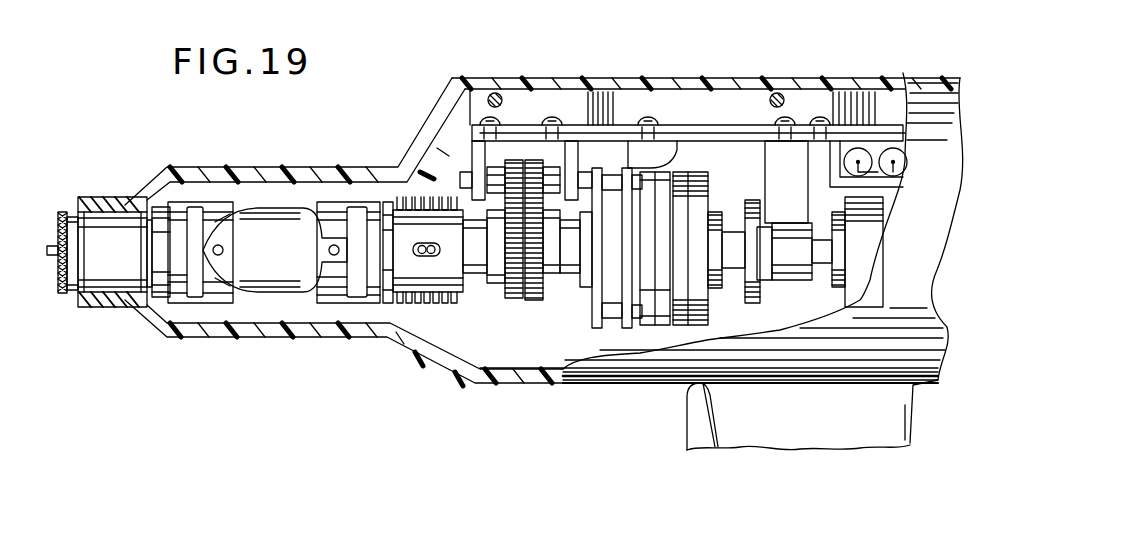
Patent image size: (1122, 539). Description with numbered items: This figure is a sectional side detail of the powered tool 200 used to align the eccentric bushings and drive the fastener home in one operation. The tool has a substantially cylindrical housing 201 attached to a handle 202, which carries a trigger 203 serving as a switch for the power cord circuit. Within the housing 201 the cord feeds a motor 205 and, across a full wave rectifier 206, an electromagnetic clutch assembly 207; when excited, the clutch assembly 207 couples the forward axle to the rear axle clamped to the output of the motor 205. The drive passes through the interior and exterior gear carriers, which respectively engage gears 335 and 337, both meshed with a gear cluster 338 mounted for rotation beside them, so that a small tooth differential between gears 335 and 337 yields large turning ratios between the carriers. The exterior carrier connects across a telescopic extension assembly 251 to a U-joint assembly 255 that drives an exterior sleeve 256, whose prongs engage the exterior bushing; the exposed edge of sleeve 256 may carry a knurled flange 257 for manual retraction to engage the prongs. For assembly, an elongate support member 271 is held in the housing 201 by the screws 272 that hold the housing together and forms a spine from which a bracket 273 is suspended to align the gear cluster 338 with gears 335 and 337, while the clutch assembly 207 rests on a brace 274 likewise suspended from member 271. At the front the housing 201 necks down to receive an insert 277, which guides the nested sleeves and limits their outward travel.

The power tool 200 is at (473, 383).
The housing 201 is at (455, 78).
The handle 202 is at (890, 432).
The trigger 203 is at (688, 418).
The motor 205 is at (858, 226).
The full wave rectifier 206 is at (880, 172).
The electromagnetic clutch assembly 207 is at (680, 174).
The telescopic extension assembly 251 is at (411, 196).
The U-joint assembly 255 is at (278, 206).
The exterior sleeve 256 is at (74, 215).
The knurled flange 257 is at (66, 293).
The elongate support member 271 is at (662, 96).
The screws 272 is at (497, 93).
The bracket 273 is at (573, 132).
The brace 274 is at (642, 168).
The insert 277 is at (112, 220).
The gear 335 is at (552, 296).
The gear 337 is at (494, 296).
The gear cluster 338 is at (531, 158).